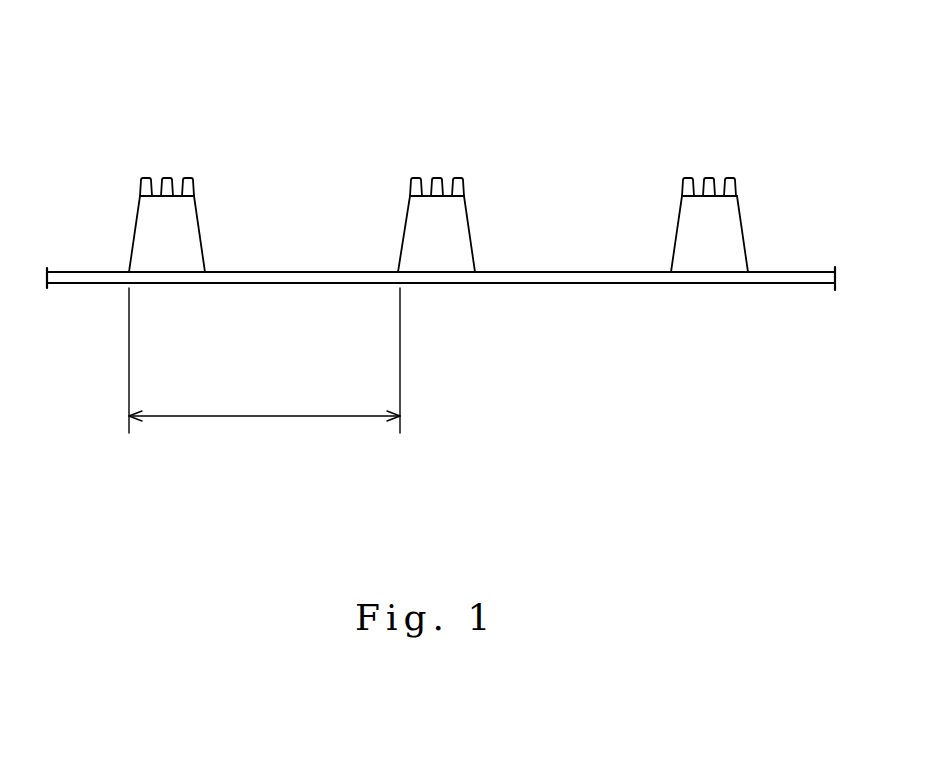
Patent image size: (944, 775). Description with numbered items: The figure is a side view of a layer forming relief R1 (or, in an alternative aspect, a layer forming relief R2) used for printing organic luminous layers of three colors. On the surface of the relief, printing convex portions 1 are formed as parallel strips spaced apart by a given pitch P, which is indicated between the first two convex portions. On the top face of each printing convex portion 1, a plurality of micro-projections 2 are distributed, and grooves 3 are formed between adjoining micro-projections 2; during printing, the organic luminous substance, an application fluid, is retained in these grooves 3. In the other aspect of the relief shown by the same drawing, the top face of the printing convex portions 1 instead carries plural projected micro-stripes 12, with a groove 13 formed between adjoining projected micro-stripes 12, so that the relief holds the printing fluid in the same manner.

The printing convex portion 1 is at (410, 225).
The micro-projection 2 is at (467, 127).
The projected micro-stripe 12 is at (416, 178).
The groove 3 is at (186, 165).
The groove 13 is at (178, 195).
The layer forming relief R1 is at (694, 44).
The layer forming relief R2 is at (617, 83).
The pitch P is at (264, 360).